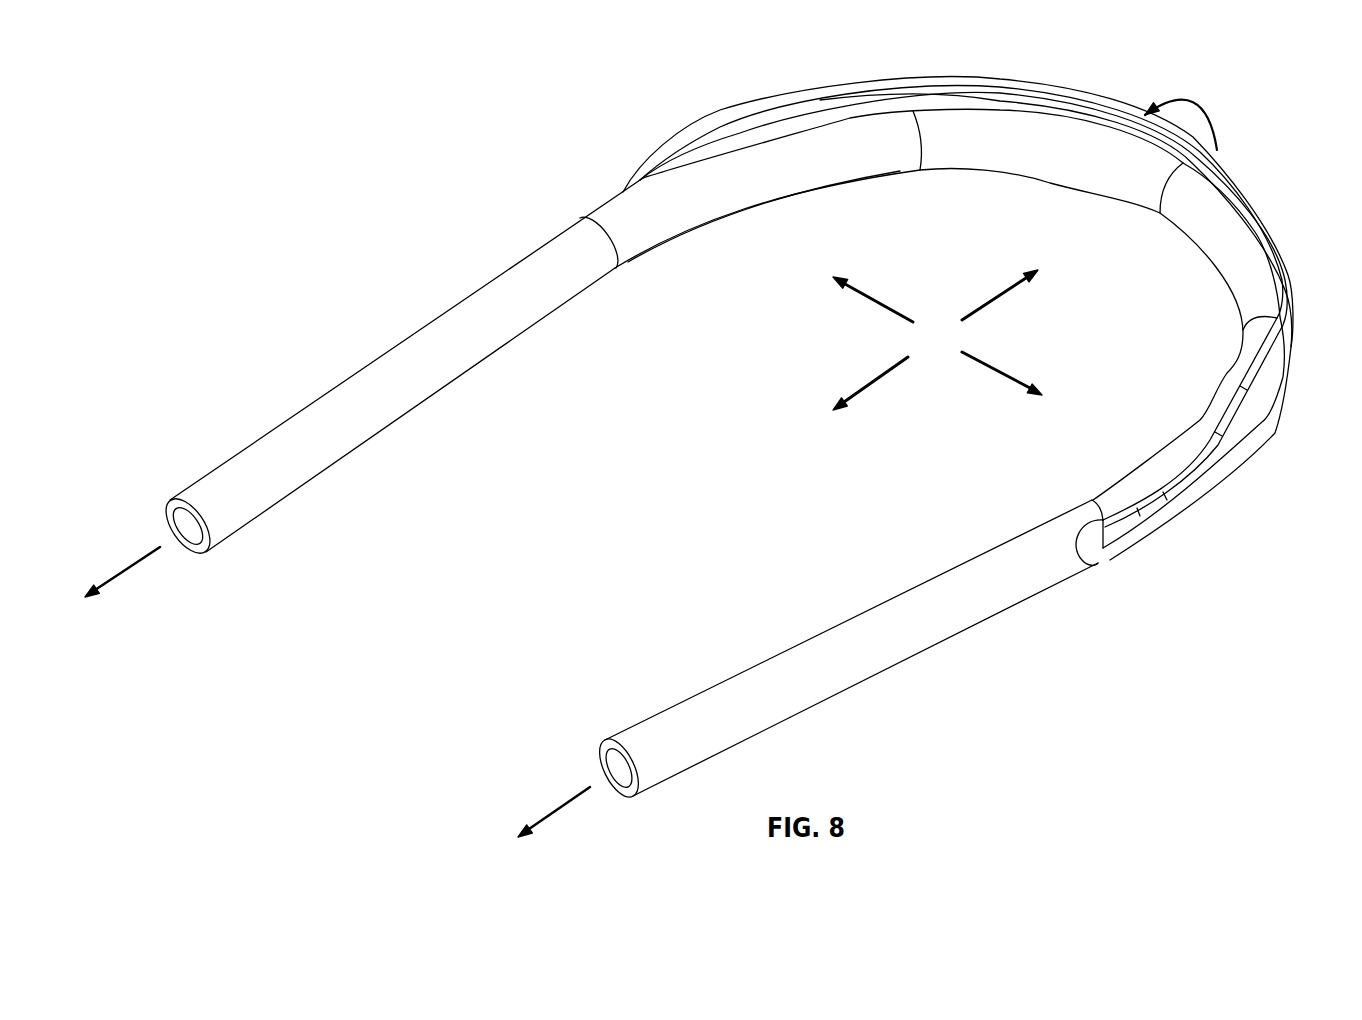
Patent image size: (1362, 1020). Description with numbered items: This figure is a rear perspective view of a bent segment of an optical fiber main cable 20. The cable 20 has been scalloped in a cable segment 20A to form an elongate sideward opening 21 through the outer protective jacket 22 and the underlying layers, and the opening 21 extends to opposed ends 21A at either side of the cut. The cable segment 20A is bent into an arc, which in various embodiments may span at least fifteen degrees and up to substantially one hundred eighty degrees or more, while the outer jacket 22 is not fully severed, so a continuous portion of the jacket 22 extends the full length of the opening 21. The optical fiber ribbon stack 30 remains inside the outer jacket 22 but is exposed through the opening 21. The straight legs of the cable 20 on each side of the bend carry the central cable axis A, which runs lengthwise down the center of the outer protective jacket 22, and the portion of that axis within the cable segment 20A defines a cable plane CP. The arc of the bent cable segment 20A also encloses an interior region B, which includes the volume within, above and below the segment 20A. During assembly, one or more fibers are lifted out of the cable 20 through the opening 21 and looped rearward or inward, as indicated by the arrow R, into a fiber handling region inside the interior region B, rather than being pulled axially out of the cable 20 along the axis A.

The optical fiber main cable 20 is at (333, 187).
The cable segment 20A is at (1222, 164).
The opening 21 is at (1268, 436).
The opposed ends 21A is at (621, 192).
The outer protective jacket 22 is at (900, 643).
The optical fiber ribbon stack 30 is at (997, 82).
The central cable axis A is at (132, 567).
The interior region B is at (710, 457).
The cable plane CP is at (870, 297).
The arrow R is at (1192, 101).